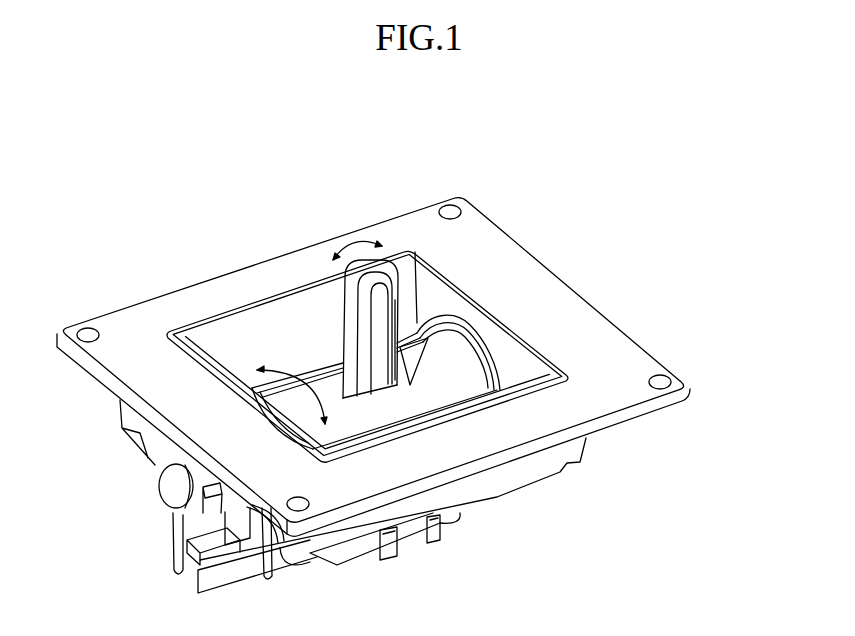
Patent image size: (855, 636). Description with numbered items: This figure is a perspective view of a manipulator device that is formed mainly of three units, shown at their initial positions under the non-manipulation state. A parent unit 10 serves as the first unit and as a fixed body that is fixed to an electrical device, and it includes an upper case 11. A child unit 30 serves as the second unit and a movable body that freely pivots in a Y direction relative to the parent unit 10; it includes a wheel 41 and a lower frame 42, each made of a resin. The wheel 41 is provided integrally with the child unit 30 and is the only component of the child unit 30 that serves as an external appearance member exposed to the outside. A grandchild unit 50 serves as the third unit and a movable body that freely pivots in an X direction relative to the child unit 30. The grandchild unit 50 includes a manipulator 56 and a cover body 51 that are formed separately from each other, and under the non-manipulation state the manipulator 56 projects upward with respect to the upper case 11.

The parent unit 10 is at (587, 445).
The upper case 11 is at (598, 334).
The child unit 30 is at (443, 397).
The wheel 41 is at (394, 413).
The lower frame 42 is at (423, 545).
The grandchild unit 50 is at (295, 173).
The cover body 51 is at (330, 398).
The manipulator 56 is at (345, 321).